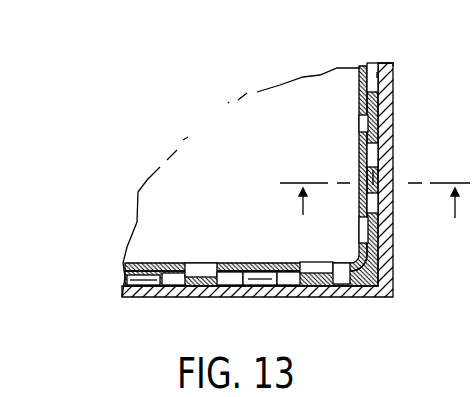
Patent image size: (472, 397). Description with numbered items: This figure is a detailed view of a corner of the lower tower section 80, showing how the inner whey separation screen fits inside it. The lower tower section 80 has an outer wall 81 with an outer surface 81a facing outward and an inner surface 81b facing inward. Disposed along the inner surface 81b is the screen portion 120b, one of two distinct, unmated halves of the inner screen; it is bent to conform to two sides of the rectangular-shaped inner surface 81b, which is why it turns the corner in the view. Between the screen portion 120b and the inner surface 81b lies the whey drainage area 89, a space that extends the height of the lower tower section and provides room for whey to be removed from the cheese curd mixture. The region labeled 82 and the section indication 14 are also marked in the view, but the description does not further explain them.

The lower tower section 80 is at (163, 212).
The outer wall 81 is at (388, 132).
The outer surface 81a is at (395, 67).
The inner surface 81b is at (375, 104).
The panel surface 82 is at (228, 204).
The whey drainage area 89 is at (373, 210).
The section line 14 is at (375, 189).
The screen portion 120b is at (343, 268).